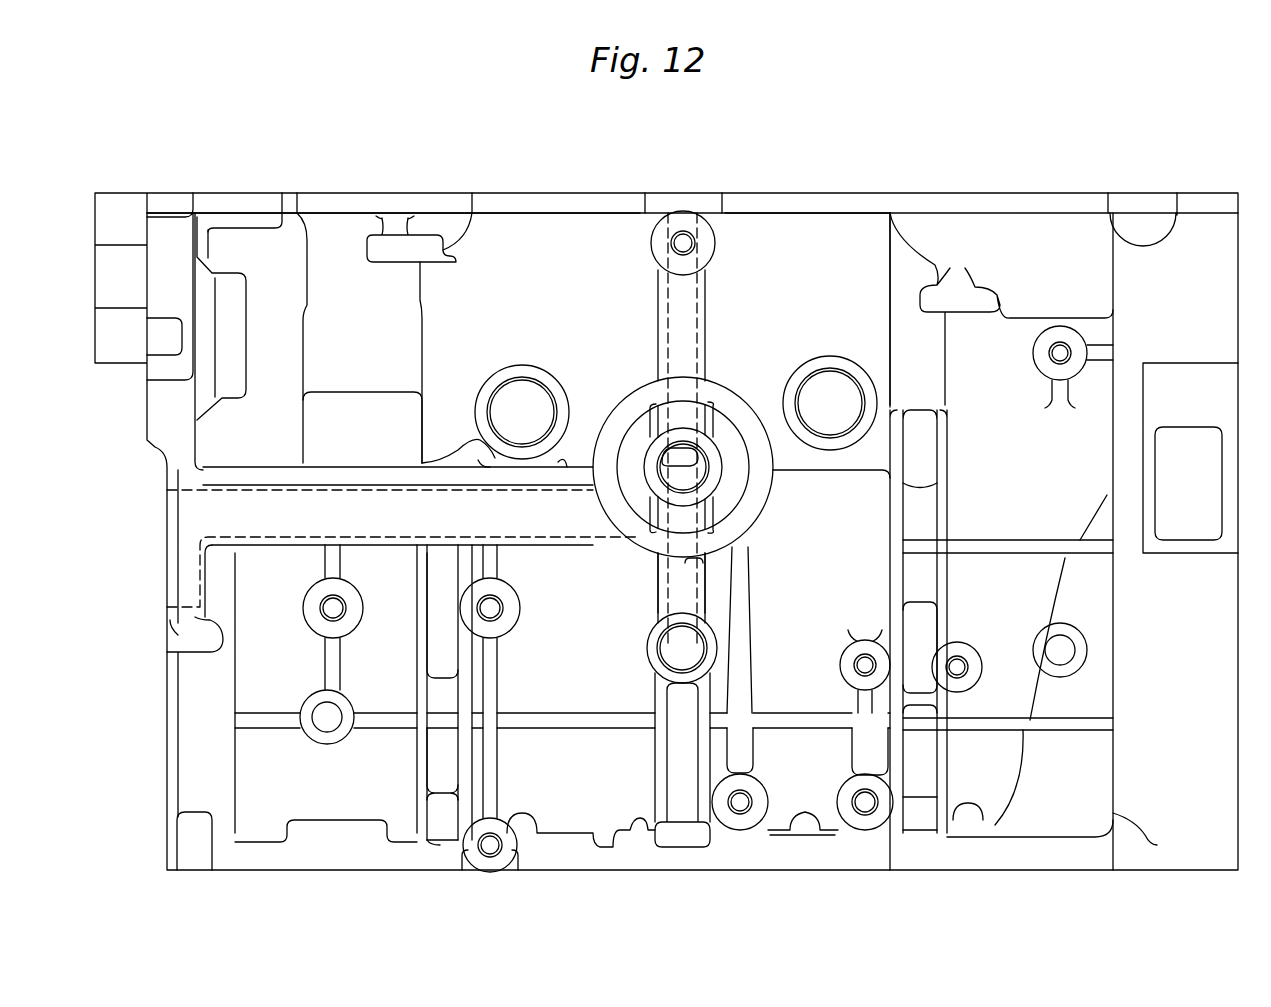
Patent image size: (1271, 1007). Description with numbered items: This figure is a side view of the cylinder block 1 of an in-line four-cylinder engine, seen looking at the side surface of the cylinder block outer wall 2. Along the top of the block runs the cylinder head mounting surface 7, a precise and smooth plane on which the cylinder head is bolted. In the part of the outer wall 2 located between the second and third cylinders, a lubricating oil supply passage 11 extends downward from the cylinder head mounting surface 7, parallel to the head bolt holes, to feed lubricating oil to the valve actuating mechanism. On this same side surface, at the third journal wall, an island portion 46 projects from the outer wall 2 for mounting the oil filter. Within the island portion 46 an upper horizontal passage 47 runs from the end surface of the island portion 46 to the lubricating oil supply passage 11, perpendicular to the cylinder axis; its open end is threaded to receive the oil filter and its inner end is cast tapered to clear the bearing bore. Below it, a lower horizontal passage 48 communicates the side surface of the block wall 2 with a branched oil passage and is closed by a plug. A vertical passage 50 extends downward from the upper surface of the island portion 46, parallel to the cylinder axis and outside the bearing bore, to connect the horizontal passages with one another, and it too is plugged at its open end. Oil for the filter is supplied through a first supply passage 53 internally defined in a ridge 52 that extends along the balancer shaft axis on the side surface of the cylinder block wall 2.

The cylinder block 1 is at (1102, 156).
The cylinder block outer wall 2 is at (529, 222).
The cylinder head mounting surface 7 is at (882, 212).
The lubricating oil supply passage 11 is at (690, 310).
The island portion 46 is at (738, 400).
The upper horizontal passage 47 is at (660, 455).
The lower horizontal passage 48 is at (665, 648).
The vertical passage 50 is at (662, 592).
The ridge 52 is at (275, 485).
The first supply passage 53 is at (215, 495).